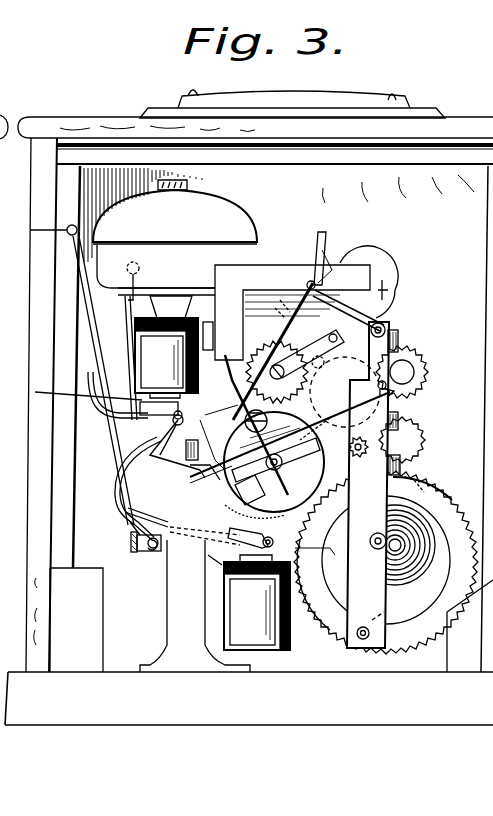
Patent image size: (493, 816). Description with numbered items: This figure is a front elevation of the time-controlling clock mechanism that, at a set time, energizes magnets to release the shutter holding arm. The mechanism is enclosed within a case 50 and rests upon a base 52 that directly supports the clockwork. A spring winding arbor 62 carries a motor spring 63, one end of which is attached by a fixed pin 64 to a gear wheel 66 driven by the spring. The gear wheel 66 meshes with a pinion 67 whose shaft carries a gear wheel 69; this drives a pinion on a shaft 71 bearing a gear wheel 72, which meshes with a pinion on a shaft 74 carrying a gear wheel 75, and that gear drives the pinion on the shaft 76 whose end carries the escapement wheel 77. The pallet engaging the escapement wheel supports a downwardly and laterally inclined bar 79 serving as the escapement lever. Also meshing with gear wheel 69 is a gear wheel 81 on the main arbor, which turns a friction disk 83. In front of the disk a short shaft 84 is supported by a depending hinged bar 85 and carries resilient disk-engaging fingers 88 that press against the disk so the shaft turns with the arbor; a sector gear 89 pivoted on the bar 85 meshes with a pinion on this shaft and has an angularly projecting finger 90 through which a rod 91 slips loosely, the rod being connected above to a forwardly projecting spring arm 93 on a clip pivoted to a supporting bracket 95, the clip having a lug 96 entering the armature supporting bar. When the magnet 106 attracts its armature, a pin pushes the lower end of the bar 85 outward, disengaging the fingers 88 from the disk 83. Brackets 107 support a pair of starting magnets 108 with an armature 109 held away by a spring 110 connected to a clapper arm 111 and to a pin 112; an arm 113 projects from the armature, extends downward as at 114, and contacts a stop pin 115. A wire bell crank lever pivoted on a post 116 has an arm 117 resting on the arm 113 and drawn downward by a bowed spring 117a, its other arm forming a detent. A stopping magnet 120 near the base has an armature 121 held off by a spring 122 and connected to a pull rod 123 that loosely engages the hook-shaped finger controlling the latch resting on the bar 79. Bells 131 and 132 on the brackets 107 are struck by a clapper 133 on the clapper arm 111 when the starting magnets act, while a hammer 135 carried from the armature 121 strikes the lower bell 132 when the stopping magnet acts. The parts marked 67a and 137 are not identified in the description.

The case 50 is at (492, 120).
The base 52 is at (140, 680).
The spring winding arbor 62 is at (372, 536).
The motor spring 63 is at (415, 510).
The fixed pin 64 is at (372, 632).
The gear wheel 66 is at (450, 513).
The pinion 67 is at (410, 428).
The pinion 67a is at (408, 450).
The gear wheel 69 is at (408, 473).
The shaft 71 is at (410, 370).
The gear wheel 72 is at (400, 345).
The shaft 74 is at (386, 326).
The gear wheel 75 is at (352, 384).
The shaft 76 is at (295, 366).
The escapement wheel 77 is at (326, 362).
The inclined bar 79 is at (292, 436).
The gear wheel 81 is at (250, 533).
The friction disk 83 is at (274, 436).
The short shaft 84 is at (205, 531).
The depending hinged bar 85 is at (292, 312).
The disk engaging fingers 88 is at (363, 437).
The sector gear 89 is at (215, 483).
The angularly projecting finger 90 is at (239, 426).
The rod 91 is at (292, 314).
The spring arm 93 is at (325, 236).
The supporting bracket 95 is at (333, 262).
The lug 96 is at (219, 428).
The magnet 106 is at (390, 286).
The brackets 107 is at (171, 307).
The starting magnets 108 is at (174, 358).
The armature 109 is at (125, 380).
The spring 110 is at (168, 425).
The clapper arm 111 is at (103, 380).
The pin 112 is at (165, 455).
The arm 113 is at (193, 461).
The downward extension 114 is at (116, 470).
The stop pin 115 is at (237, 473).
The post 116 is at (180, 406).
The arm 117 is at (163, 516).
The spring 117a is at (130, 524).
The stopping magnet 120 is at (257, 602).
The armature 121 is at (210, 560).
The spring 122 is at (345, 512).
The pull rod 123 is at (165, 545).
The bell 131 is at (175, 212).
The bell 132 is at (156, 270).
The clapper 133 is at (38, 234).
The hammer 135 is at (140, 270).
The connecting rod 137 is at (73, 389).